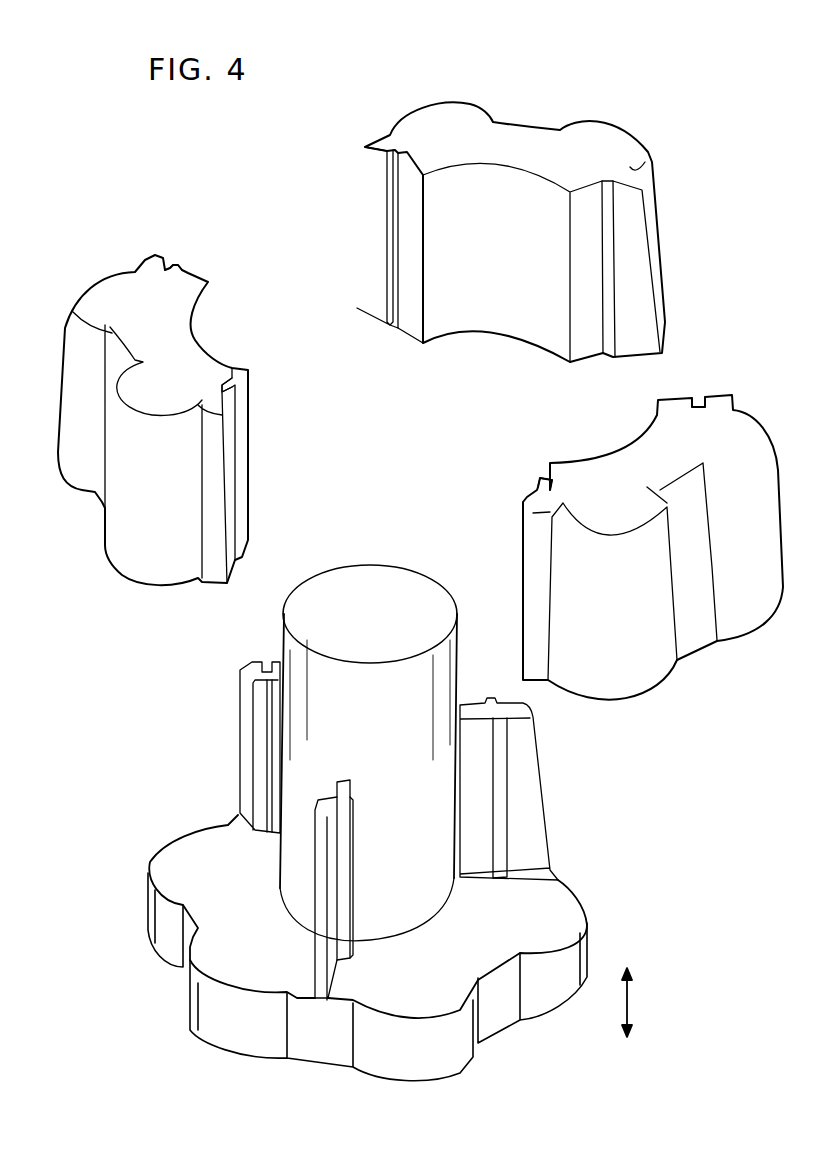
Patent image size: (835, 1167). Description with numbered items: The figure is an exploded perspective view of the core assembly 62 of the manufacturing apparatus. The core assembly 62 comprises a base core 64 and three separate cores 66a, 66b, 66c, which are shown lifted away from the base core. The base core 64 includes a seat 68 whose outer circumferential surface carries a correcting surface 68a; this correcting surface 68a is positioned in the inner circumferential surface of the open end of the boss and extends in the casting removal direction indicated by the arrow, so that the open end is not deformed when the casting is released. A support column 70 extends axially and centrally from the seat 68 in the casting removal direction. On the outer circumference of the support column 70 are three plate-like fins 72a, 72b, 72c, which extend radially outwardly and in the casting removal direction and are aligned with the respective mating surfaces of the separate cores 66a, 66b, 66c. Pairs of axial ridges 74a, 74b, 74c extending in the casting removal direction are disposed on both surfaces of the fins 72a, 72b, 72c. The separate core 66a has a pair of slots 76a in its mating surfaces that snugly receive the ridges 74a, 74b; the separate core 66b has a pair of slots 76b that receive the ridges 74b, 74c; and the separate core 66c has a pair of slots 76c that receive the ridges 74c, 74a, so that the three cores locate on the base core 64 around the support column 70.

The core assembly 62 is at (259, 123).
The base core 64 is at (391, 813).
The separate core 66a is at (507, 232).
The separate core 66b is at (155, 407).
The separate core 66c is at (647, 541).
The seat 68 is at (391, 951).
The correcting surface 68a is at (433, 1062).
The support column 70 is at (330, 598).
The fin 72a is at (530, 767).
The fin 72b is at (231, 729).
The fin 72c is at (356, 877).
The axial ridge 74a is at (490, 697).
The axial ridge 74b is at (278, 662).
The axial ridge 74c is at (312, 808).
The slot 76a is at (392, 288).
The slot 76b is at (173, 268).
The slot 76c is at (698, 397).